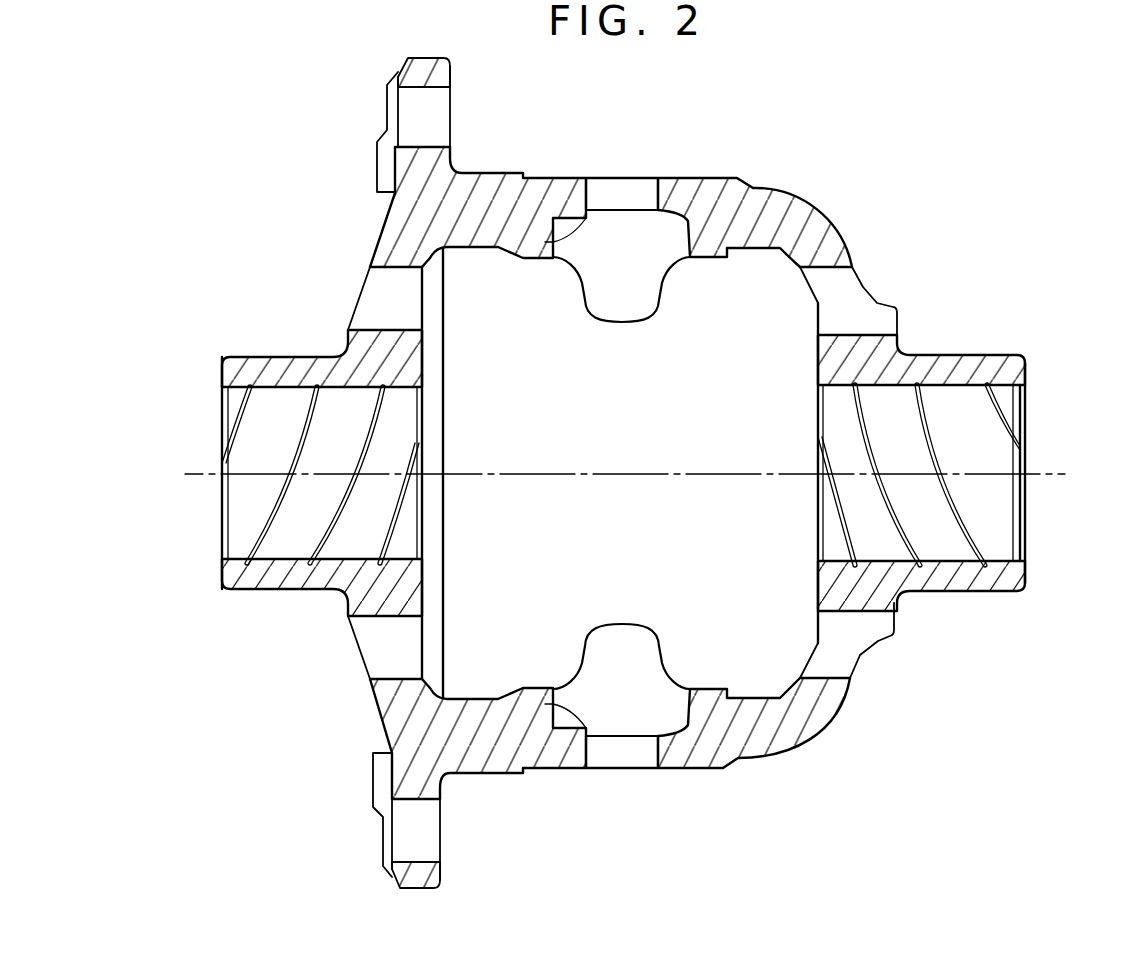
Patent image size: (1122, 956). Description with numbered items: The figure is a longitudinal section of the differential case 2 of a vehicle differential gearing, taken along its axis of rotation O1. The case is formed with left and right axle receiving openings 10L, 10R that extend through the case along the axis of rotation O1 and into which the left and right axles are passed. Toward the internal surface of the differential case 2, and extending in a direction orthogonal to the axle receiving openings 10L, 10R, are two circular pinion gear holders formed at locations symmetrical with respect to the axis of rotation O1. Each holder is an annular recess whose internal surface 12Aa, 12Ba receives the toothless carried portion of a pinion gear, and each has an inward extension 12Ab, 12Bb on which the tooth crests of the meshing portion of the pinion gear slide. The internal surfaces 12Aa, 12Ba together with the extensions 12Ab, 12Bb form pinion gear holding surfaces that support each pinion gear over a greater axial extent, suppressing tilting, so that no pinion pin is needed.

The differential case 2 is at (510, 166).
The internal surface of the annular recess 12Aa is at (592, 212).
The inward extension 12Ab is at (619, 300).
The internal surface of the annular recess 12Ba is at (567, 733).
The inward extension 12Bb is at (618, 634).
The axle receiving opening 10L is at (297, 560).
The axle receiving opening 10R is at (950, 563).
The axis of rotation O1 is at (638, 474).